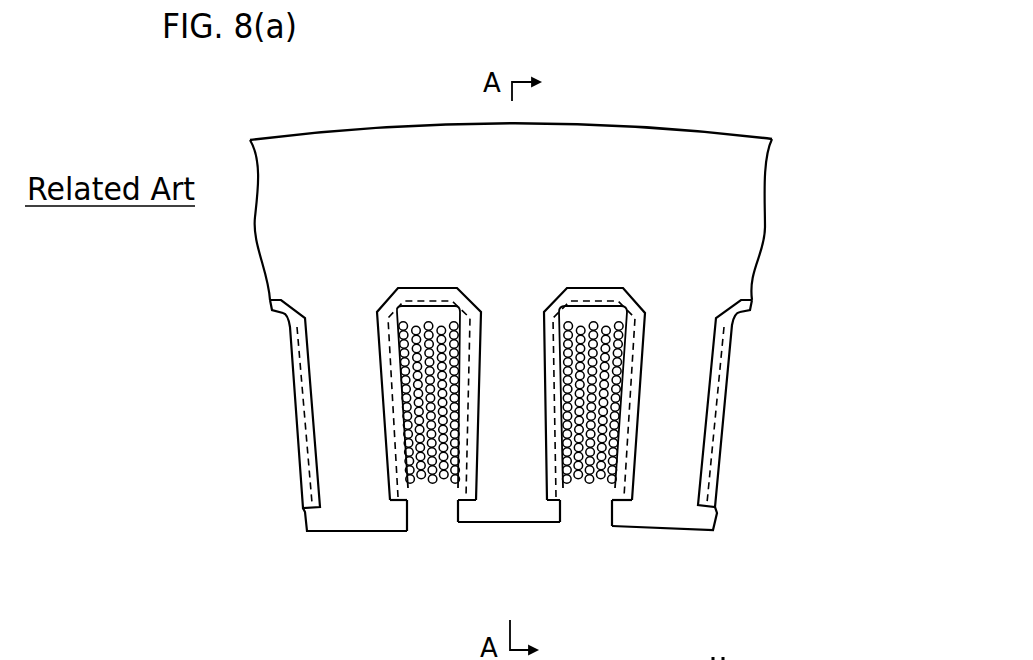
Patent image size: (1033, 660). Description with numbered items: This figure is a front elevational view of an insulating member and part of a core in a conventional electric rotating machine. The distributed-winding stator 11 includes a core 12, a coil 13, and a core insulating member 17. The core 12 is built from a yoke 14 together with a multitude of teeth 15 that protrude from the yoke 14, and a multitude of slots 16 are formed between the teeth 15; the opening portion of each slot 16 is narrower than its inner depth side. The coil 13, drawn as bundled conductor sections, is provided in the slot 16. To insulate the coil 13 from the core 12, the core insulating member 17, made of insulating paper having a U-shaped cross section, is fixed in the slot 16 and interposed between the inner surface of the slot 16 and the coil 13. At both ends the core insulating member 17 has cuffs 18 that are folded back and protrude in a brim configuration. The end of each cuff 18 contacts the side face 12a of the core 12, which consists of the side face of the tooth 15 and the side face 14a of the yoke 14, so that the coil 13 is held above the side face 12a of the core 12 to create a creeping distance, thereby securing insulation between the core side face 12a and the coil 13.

The distributed-winding stator 11 is at (669, 102).
The core 12 is at (753, 136).
The side face of the core 12a is at (417, 146).
The coil 13 is at (447, 489).
The yoke 14 is at (755, 207).
The side face of the yoke 14a is at (690, 295).
The teeth 15 is at (348, 520).
The slots 16 is at (433, 513).
The core insulating member 17 is at (375, 376).
The cuffs 18 is at (380, 414).